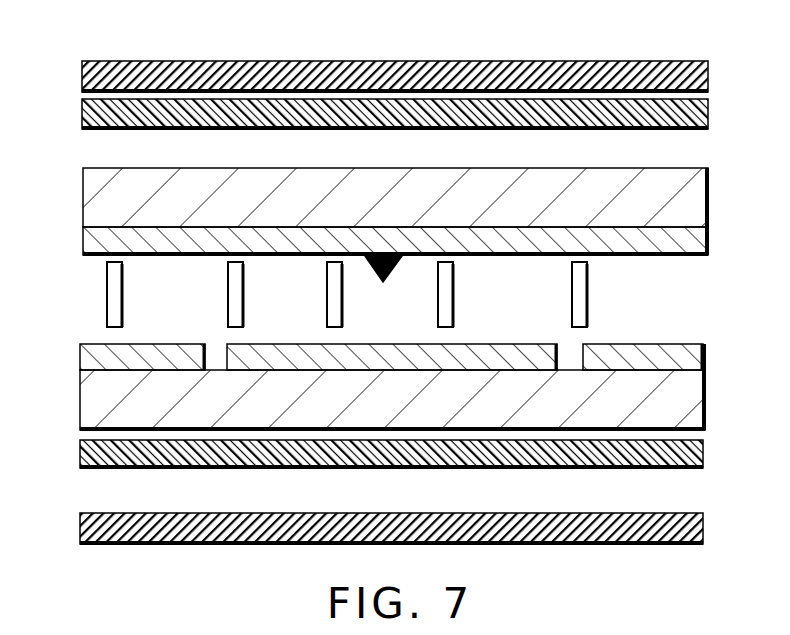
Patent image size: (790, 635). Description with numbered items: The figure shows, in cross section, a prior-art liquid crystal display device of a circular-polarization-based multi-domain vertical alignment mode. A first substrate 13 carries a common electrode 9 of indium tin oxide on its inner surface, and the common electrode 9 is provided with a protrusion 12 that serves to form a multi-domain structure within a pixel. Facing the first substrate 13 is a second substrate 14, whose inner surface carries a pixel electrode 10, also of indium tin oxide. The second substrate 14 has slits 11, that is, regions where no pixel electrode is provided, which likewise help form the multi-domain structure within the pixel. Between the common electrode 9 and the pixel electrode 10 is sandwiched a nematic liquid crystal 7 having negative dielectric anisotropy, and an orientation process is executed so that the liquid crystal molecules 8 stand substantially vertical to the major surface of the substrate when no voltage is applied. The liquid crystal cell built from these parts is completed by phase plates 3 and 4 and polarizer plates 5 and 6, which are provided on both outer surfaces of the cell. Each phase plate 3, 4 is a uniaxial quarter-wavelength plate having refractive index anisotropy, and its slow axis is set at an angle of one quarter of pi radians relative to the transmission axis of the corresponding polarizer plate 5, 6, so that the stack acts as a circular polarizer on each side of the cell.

The phase plate 3 is at (700, 112).
The phase plate 4 is at (695, 455).
The polarizer plate 5 is at (712, 75).
The polarizer plate 6 is at (705, 526).
The nematic liquid crystal 7 is at (683, 285).
The liquid crystal molecules 8 is at (580, 310).
The common electrode 9 is at (708, 242).
The pixel electrode 10 is at (703, 360).
The slits 11 is at (571, 360).
The protrusion 12 is at (378, 262).
The first substrate 13 is at (95, 203).
The second substrate 14 is at (95, 397).